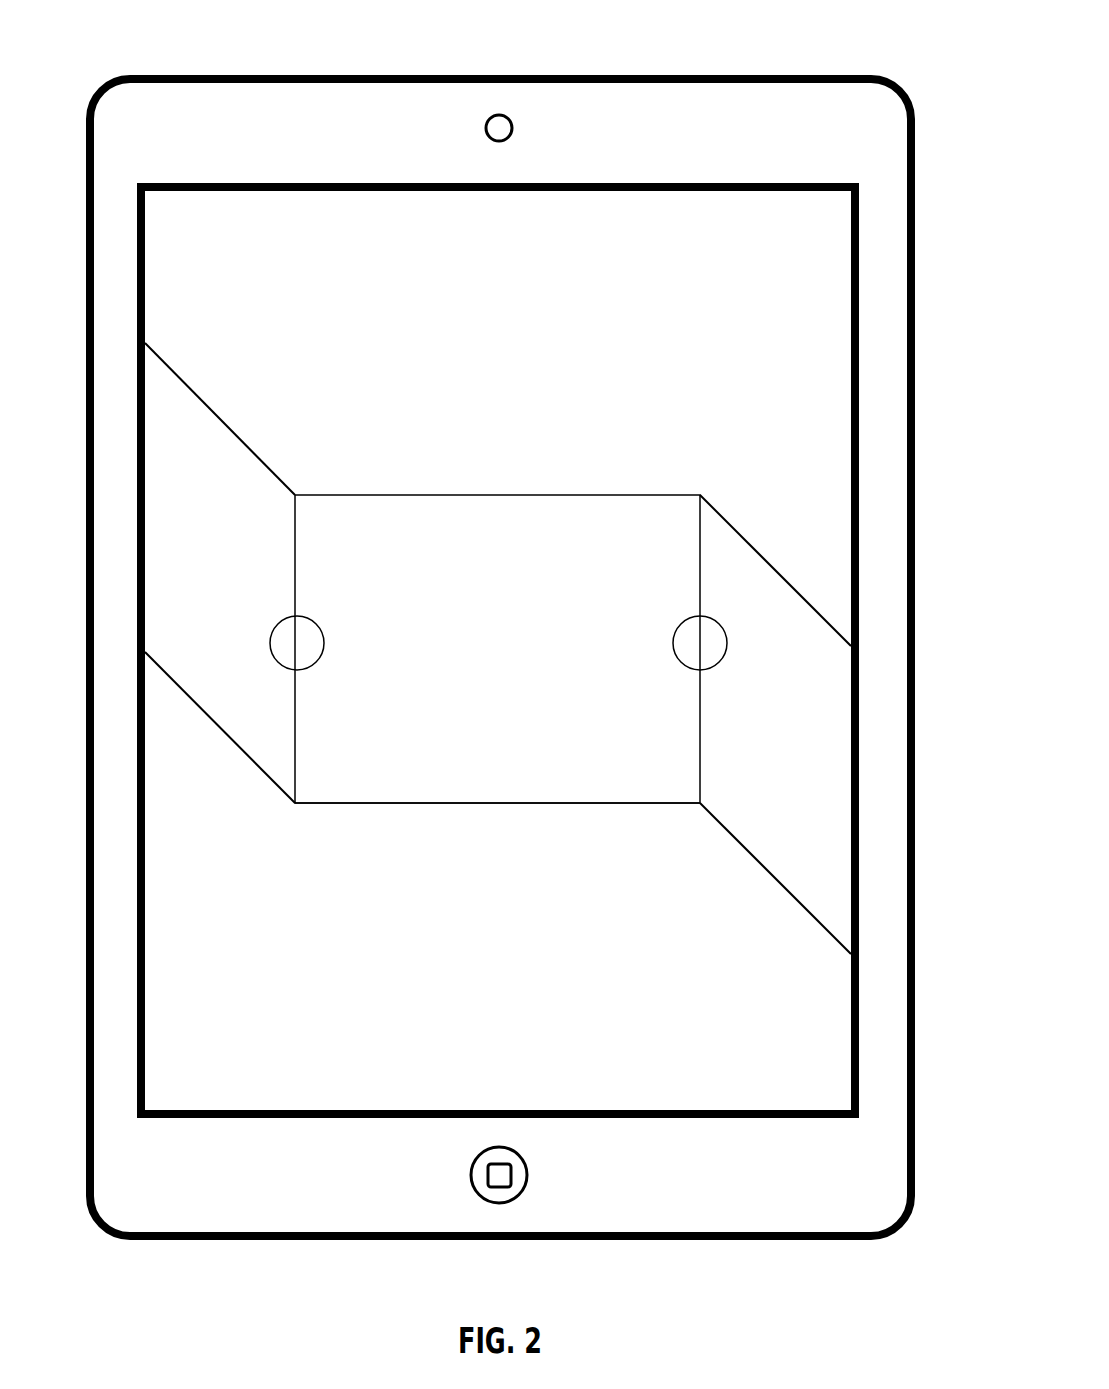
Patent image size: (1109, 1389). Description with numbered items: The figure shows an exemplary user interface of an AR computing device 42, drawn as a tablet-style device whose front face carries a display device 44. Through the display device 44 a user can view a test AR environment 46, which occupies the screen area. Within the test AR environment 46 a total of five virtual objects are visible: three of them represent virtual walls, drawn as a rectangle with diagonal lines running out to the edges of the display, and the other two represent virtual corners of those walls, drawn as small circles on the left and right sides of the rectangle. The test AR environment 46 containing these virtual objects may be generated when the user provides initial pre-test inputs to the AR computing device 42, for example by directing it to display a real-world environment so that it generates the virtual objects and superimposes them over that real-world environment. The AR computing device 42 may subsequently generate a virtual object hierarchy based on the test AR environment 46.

The AR computing device 42 is at (258, 63).
The display device 44 is at (170, 173).
The test AR environment 46 is at (223, 213).